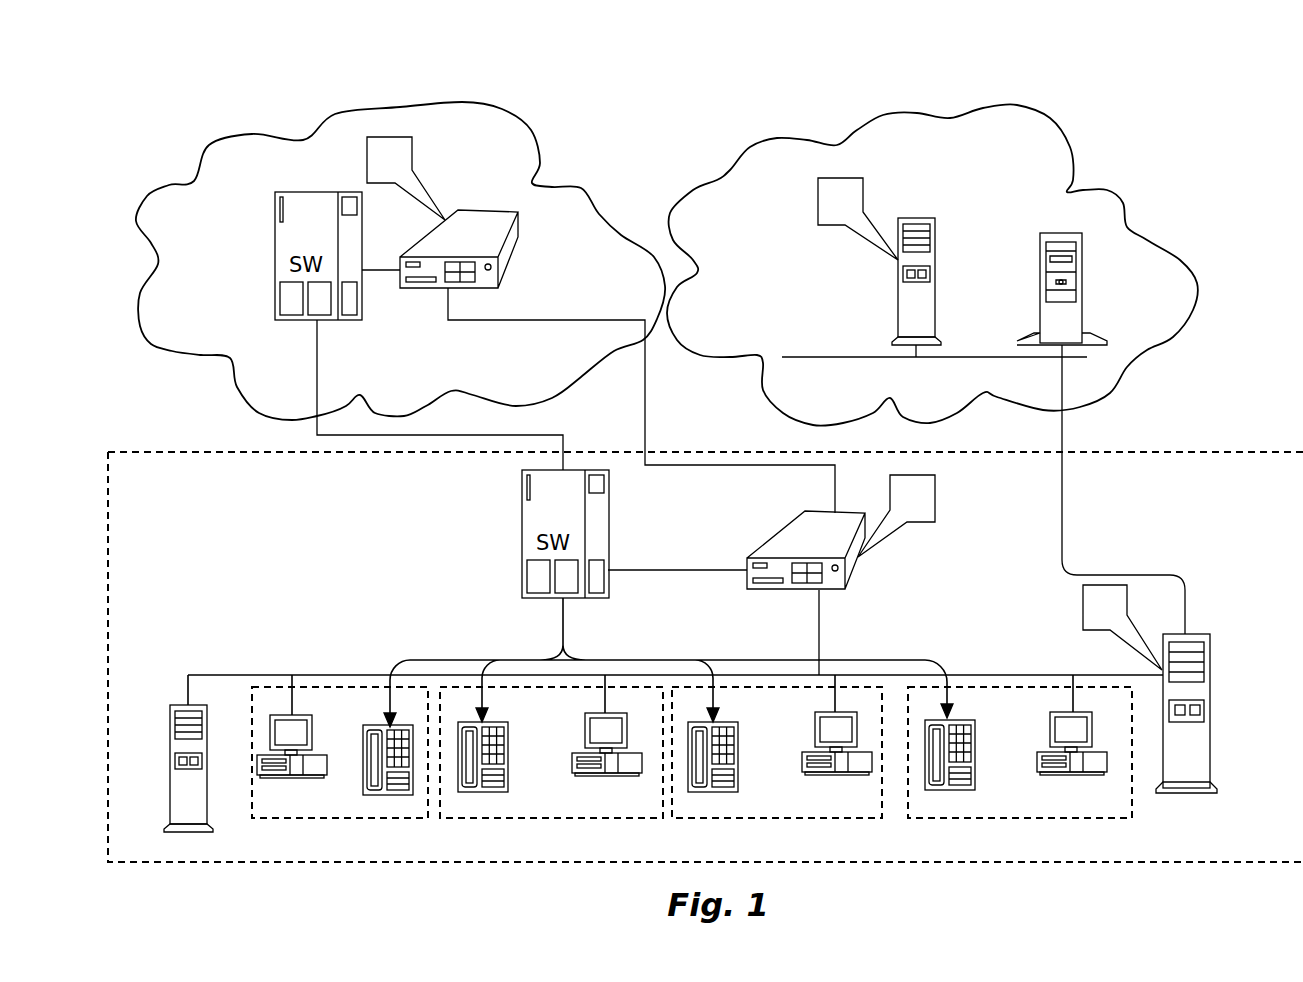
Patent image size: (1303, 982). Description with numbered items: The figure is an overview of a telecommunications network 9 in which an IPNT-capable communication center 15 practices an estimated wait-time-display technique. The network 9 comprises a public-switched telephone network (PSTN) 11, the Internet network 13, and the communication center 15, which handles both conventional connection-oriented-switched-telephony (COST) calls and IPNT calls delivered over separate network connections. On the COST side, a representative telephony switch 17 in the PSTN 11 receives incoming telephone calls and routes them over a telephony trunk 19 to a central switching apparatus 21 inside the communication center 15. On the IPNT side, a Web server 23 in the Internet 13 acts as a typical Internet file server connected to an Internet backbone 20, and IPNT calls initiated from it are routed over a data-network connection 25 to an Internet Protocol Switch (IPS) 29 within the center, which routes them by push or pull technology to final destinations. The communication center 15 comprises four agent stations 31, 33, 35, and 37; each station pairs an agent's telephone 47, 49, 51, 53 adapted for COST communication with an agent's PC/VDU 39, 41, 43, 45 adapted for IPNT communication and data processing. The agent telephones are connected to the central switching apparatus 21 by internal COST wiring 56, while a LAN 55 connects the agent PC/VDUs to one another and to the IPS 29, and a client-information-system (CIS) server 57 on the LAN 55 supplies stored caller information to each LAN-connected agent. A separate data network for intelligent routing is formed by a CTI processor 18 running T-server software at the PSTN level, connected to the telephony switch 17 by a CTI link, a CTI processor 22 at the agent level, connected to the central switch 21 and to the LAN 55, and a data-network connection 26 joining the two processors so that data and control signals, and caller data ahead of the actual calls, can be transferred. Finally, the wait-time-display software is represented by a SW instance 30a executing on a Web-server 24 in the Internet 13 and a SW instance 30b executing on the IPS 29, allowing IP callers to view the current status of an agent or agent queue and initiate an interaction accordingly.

The telecommunications network 9 is at (568, 128).
The public-switched telephone network (PSTN) 11 is at (158, 181).
The Internet network 13 is at (730, 172).
The communication center 15 is at (1178, 445).
The telephony switch 17 is at (274, 270).
The CTI processor 18 is at (518, 248).
The COST-network connection (telephony trunk) 19 is at (320, 388).
The Internet backbone 20 is at (850, 357).
The central switching apparatus 21 is at (608, 555).
The CTI processor 22 is at (780, 537).
The Web server 23 is at (1040, 288).
The Web-server 24 is at (898, 310).
The data-network connection 25 is at (1062, 545).
The data-network connection 26 is at (648, 424).
The Internet Protocol Switch (IPS) 29 is at (1210, 670).
The SW instance 30a is at (818, 215).
The SW instance 30b is at (1083, 618).
The agent station 31 is at (340, 770).
The agent station 33 is at (551, 771).
The agent station 35 is at (777, 771).
The agent station 37 is at (1020, 770).
The agent's PC/VDU 39 is at (320, 776).
The agent's PC/VDU 41 is at (585, 772).
The agent's PC/VDU 43 is at (808, 772).
The agent's PC/VDU 45 is at (1050, 770).
The agent's telephone 47 is at (363, 755).
The agent's telephone 49 is at (508, 753).
The agent's telephone 51 is at (738, 757).
The agent's telephone 53 is at (975, 757).
The LAN 55 is at (333, 675).
The internal COST wiring 56 is at (762, 658).
The client-information-system (CIS) server 57 is at (170, 760).